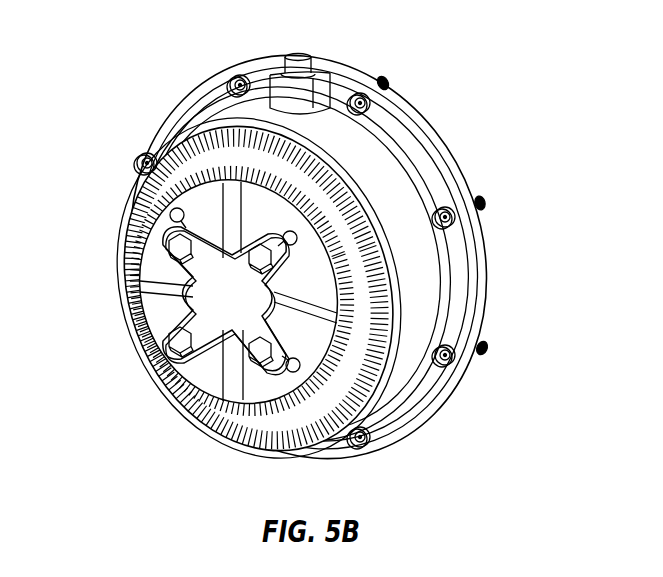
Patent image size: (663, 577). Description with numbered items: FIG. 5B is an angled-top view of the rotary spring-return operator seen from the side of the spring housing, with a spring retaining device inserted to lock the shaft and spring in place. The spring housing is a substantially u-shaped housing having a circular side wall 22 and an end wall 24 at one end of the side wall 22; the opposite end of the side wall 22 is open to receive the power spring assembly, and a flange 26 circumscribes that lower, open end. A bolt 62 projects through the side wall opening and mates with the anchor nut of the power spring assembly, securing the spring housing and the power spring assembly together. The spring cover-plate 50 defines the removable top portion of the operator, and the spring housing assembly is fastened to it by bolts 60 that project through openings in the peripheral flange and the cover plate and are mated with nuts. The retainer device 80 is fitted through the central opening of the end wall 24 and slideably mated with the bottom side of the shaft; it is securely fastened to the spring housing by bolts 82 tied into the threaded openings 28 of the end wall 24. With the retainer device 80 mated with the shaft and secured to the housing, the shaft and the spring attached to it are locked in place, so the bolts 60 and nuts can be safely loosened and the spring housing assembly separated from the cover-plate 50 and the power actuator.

The circular side wall 22 is at (375, 172).
The end wall 24 is at (213, 410).
The flange 26 is at (427, 390).
The threaded openings 28 is at (170, 216).
The spring cover-plate 50 is at (490, 257).
The bolts 60 is at (380, 440).
The bolt 62 is at (313, 60).
The retainer device 80 is at (210, 307).
The bolts 82 is at (172, 252).